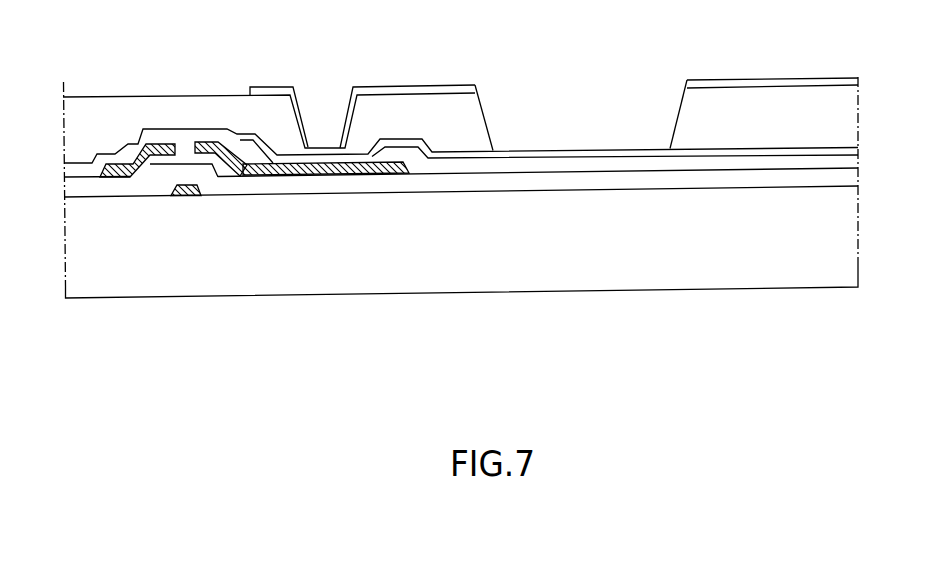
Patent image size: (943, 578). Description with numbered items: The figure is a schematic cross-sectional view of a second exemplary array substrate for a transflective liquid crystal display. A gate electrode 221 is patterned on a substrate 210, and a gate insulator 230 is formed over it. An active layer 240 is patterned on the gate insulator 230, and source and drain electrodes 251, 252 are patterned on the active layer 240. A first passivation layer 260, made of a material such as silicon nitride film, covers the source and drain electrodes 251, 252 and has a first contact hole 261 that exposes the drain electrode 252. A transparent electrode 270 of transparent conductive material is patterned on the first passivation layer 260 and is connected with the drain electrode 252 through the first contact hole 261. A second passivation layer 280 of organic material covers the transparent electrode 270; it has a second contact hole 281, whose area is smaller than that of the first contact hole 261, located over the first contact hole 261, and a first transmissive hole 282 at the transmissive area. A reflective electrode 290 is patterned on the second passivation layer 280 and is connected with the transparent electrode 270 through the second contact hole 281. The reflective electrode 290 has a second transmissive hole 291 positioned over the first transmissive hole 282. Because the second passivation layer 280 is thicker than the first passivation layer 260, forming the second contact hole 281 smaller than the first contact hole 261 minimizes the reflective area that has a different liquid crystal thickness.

The substrate 210 is at (443, 265).
The gate electrode 221 is at (188, 195).
The gate insulator 230 is at (250, 193).
The active layer 240 is at (188, 132).
The source electrode 251 is at (160, 127).
The drain electrode 252 is at (218, 132).
The first passivation layer 260 is at (82, 163).
The first contact hole 261 is at (273, 160).
The transparent electrode 270 is at (453, 152).
The second passivation layer 280 is at (115, 110).
The second contact hole 281 is at (307, 176).
The first transmissive hole 282 is at (495, 160).
The reflective electrode 290 is at (422, 85).
The second transmissive hole 291 is at (687, 71).